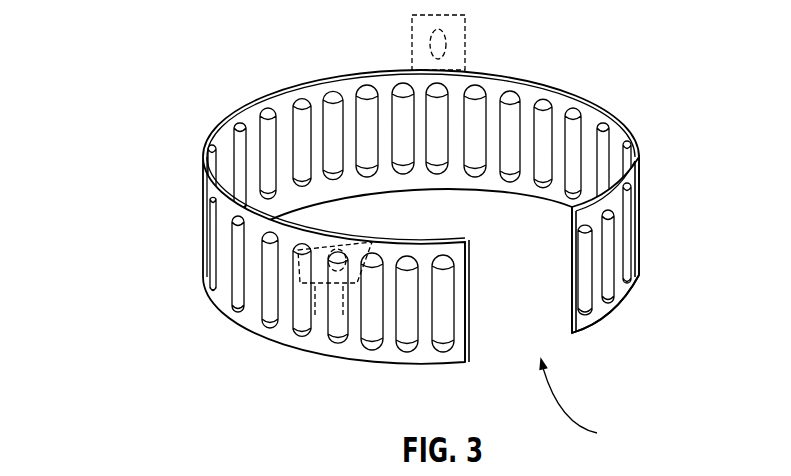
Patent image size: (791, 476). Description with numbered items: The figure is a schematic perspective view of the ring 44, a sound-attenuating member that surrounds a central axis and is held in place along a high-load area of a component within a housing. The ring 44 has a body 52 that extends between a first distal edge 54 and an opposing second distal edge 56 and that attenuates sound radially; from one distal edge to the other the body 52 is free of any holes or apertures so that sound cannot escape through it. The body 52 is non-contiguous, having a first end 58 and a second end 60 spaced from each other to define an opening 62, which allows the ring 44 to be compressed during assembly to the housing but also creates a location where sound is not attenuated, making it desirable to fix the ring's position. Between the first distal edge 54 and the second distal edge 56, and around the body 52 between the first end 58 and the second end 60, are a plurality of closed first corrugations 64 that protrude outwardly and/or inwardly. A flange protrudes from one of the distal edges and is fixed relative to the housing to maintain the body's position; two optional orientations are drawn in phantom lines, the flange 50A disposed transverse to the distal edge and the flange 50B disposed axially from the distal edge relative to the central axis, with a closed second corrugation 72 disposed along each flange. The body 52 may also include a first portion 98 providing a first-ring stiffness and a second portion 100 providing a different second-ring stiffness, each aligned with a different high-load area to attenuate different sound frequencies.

The ring 44 is at (112, 50).
The flange 50A is at (311, 323).
The flange 50B is at (477, 37).
The body 52 is at (637, 273).
The first distal edge 54 is at (298, 88).
The second distal edge 56 is at (589, 326).
The first end 58 is at (470, 302).
The second end 60 is at (570, 262).
The opening 62 is at (586, 404).
The first corrugations 64 is at (413, 224).
The second corrugation 72 is at (420, 42).
The first portion 98 is at (322, 281).
The second portion 100 is at (612, 221).